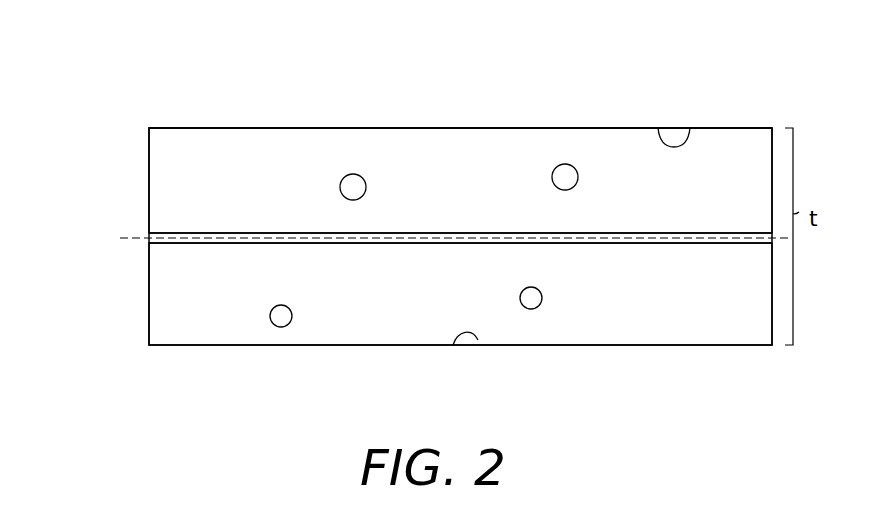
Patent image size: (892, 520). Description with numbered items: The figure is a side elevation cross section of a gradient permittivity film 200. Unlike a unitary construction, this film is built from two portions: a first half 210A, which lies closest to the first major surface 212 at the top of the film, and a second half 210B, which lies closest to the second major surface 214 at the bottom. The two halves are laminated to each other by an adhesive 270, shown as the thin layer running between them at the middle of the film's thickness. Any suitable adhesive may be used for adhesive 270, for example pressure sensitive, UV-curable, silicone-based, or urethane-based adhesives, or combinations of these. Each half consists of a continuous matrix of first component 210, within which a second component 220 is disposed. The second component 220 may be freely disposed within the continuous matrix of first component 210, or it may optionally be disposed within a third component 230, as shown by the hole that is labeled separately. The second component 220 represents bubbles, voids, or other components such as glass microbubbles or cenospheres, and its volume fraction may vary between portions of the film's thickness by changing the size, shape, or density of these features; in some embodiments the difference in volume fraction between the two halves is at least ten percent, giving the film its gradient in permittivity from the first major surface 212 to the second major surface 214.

The gradient permittivity film 200 is at (148, 38).
The first component 210 is at (279, 143).
The first half 210A is at (173, 192).
The second half 210B is at (173, 285).
The first major surface 212 is at (688, 128).
The second major surface 214 is at (478, 340).
The second component 220 is at (565, 164).
The third component 230 is at (552, 176).
The adhesive 270 is at (697, 243).